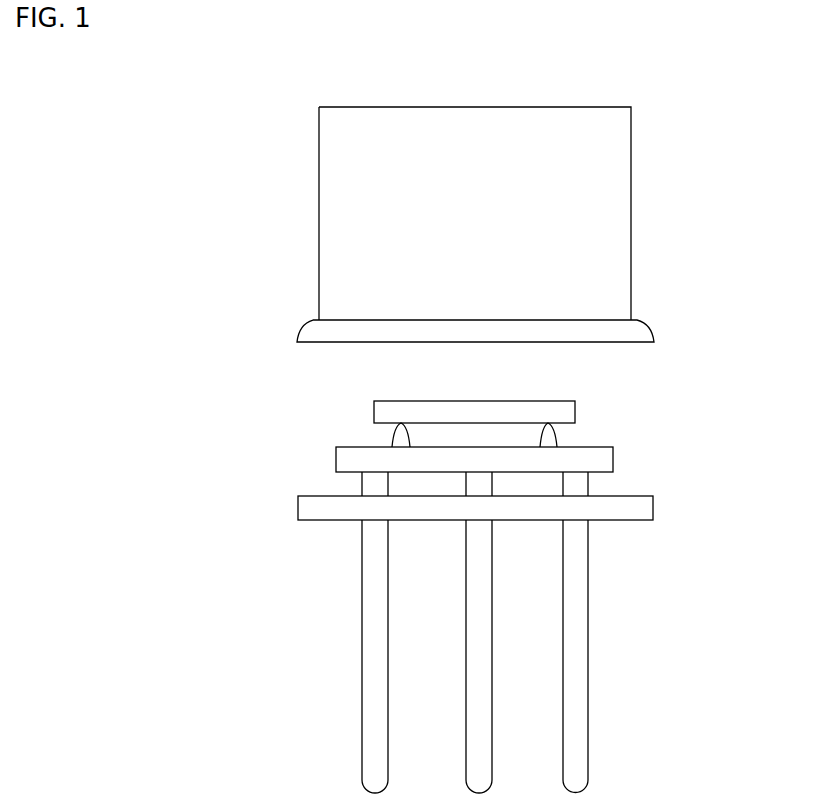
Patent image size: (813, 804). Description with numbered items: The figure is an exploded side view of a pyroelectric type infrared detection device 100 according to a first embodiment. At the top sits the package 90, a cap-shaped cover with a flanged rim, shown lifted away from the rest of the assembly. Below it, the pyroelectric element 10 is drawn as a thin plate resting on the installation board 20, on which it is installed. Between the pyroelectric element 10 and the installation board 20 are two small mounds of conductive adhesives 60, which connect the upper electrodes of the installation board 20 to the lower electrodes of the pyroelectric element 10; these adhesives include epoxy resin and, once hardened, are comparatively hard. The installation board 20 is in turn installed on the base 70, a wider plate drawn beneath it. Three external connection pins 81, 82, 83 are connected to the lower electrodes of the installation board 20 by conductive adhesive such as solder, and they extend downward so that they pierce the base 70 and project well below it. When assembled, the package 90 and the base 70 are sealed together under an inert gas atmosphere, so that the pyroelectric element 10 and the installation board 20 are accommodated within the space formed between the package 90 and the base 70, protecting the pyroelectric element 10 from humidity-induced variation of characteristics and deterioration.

The pyroelectric type infrared detection device 100 is at (682, 127).
The package 90 is at (613, 238).
The pyroelectric element 10 is at (567, 411).
The conductive adhesives 60 is at (395, 440).
The installation board 20 is at (607, 463).
The base 70 is at (645, 510).
The external connection pin 81 is at (581, 603).
The external connection pin 82 is at (482, 667).
The external connection pin 83 is at (375, 603).